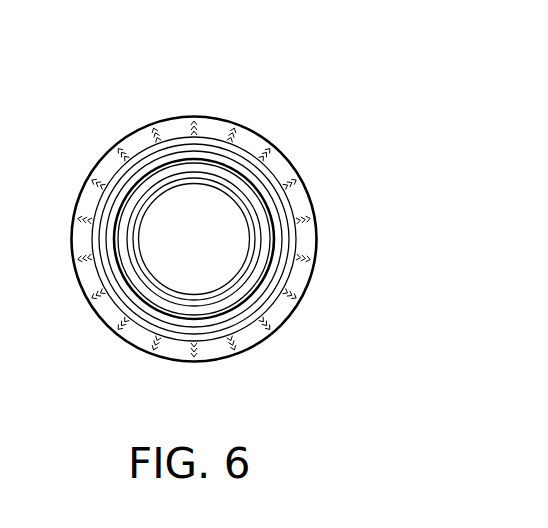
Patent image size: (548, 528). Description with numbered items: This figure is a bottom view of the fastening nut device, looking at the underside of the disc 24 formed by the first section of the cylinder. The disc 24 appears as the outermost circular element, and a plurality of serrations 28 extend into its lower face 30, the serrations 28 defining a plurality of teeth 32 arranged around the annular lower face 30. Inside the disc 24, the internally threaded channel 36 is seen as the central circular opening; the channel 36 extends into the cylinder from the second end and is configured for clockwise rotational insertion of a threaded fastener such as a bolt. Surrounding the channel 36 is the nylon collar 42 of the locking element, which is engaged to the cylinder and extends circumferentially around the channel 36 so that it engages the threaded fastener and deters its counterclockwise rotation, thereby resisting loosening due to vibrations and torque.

The disc 24 is at (258, 353).
The serrations 28 is at (187, 108).
The lower face 30 is at (306, 293).
The teeth 32 is at (266, 128).
The channel 36 is at (210, 242).
The nylon collar 42 is at (258, 213).